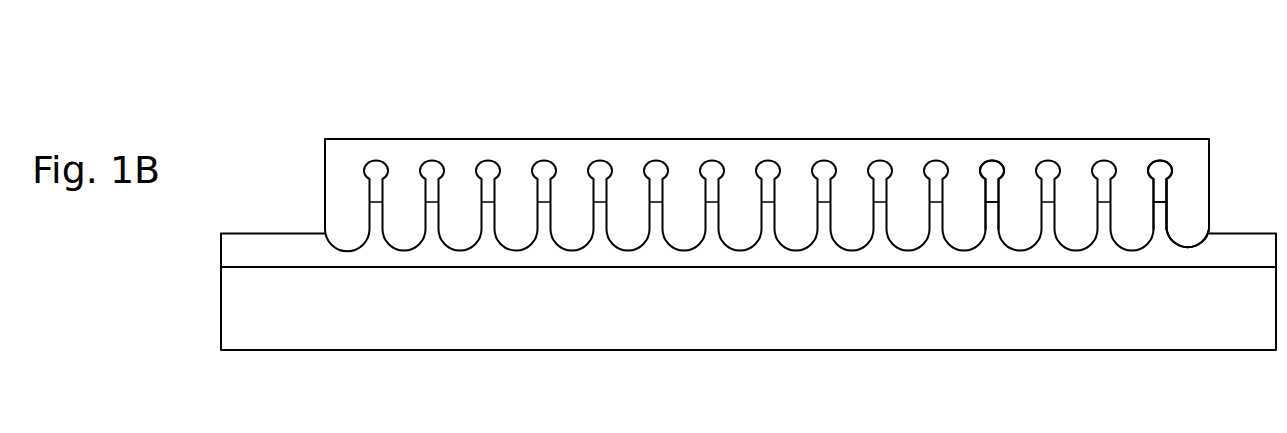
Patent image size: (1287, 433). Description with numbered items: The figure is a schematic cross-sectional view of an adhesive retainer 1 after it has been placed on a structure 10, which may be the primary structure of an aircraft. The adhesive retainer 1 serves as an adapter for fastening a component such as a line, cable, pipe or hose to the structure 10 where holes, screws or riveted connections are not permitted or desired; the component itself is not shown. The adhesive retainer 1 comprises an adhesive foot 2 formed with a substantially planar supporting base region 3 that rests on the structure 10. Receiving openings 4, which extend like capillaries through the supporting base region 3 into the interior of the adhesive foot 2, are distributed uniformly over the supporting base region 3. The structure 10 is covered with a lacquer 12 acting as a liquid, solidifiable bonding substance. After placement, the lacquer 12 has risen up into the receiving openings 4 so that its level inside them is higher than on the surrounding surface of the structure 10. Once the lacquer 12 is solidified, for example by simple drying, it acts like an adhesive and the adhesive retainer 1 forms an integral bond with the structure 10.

The adhesive retainer 1 is at (652, 122).
The adhesive foot 2 is at (793, 148).
The supporting base region 3 is at (1188, 220).
The receiving openings 4 is at (994, 245).
The structure 10 is at (233, 313).
The lacquer 12 is at (260, 247).